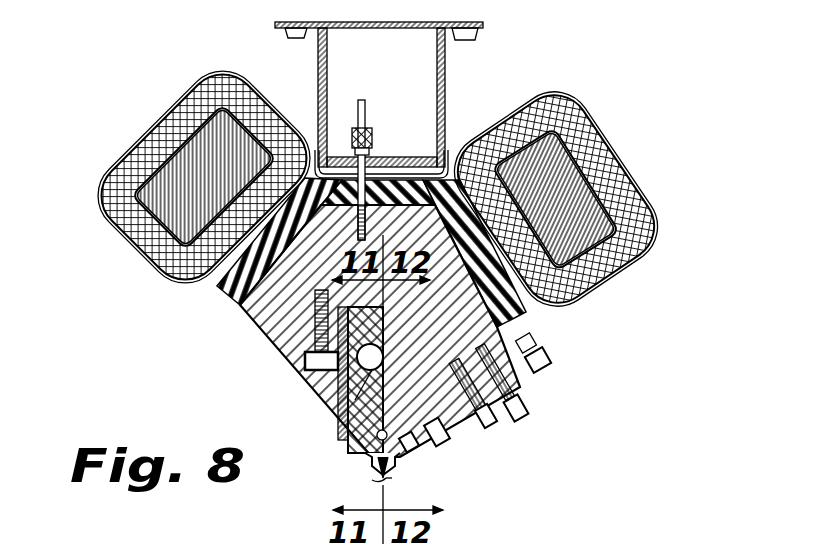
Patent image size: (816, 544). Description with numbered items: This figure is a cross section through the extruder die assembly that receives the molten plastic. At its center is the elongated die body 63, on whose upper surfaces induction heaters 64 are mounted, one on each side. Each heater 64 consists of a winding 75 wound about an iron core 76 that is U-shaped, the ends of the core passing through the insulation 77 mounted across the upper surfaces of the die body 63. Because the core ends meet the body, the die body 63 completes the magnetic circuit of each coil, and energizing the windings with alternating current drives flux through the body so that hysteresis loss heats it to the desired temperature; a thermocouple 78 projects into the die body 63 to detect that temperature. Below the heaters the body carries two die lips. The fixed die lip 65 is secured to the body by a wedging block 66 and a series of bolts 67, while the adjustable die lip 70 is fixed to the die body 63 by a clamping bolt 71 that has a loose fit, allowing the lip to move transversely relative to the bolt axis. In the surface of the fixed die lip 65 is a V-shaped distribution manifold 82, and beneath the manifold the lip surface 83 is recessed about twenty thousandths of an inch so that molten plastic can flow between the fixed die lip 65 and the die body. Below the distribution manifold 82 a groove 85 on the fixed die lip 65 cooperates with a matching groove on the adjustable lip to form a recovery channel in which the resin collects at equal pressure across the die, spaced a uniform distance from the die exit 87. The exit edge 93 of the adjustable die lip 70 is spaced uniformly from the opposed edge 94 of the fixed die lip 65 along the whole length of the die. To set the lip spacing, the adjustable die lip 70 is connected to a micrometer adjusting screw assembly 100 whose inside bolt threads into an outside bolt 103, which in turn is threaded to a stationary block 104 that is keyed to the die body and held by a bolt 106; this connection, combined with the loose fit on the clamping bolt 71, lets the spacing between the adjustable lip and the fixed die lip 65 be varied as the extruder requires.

The die body 63 is at (265, 350).
The induction heater 64 is at (120, 152).
The fixed die lip 65 is at (362, 450).
The wedging block 66 is at (343, 400).
The bolt 67 is at (308, 375).
The adjustable die lip 70 is at (405, 453).
The clamping bolt 71 is at (437, 433).
The winding 75 is at (135, 240).
The iron core 76 is at (172, 128).
The insulation 77 is at (232, 300).
The thermocouple 78 is at (368, 118).
The distribution manifold 82 is at (360, 440).
The surface 83 is at (369, 372).
The groove 85 is at (368, 458).
The die exit 87 is at (385, 478).
The exit edge 93 is at (392, 478).
The edge 94 is at (372, 480).
The micrometer adjusting screw assembly 100 is at (514, 398).
The outside bolt 103 is at (542, 360).
The stationary block 104 is at (520, 388).
The bolt 106 is at (492, 392).